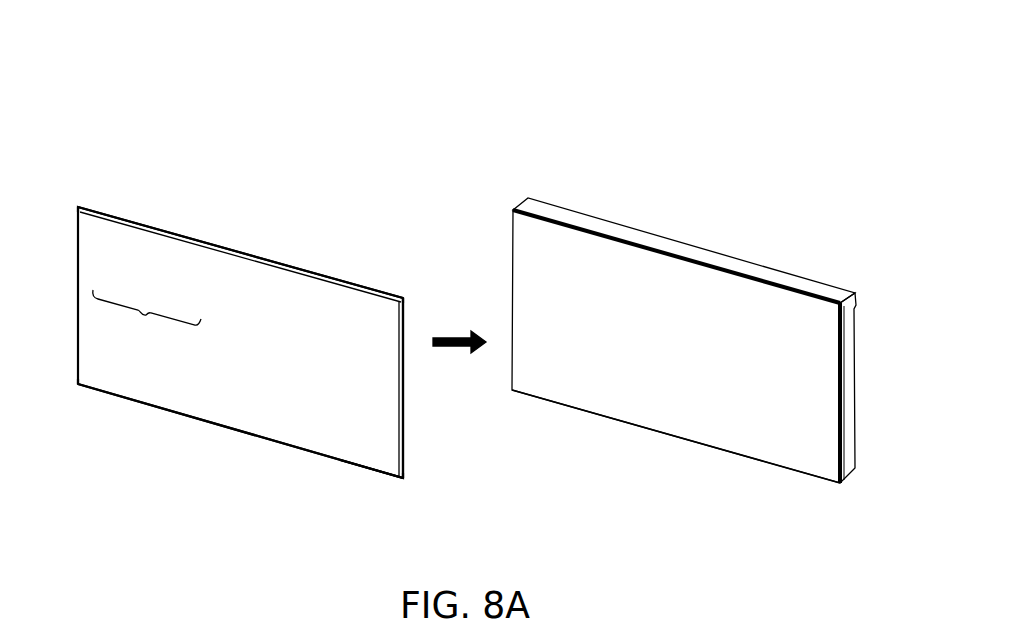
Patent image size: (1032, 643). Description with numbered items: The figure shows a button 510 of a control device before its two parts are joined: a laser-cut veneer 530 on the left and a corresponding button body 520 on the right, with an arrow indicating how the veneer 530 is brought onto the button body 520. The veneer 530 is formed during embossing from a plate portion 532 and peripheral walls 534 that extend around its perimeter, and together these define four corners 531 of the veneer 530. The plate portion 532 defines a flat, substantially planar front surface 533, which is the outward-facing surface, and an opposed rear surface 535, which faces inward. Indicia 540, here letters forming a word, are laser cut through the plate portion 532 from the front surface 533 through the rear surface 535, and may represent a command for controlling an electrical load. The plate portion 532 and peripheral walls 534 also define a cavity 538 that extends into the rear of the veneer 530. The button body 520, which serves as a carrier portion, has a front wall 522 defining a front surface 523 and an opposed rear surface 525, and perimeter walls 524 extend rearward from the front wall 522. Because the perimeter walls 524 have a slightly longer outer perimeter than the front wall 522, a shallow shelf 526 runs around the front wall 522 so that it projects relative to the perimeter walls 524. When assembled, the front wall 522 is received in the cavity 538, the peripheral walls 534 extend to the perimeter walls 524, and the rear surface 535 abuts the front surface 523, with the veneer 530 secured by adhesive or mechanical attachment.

The button 510 is at (80, 92).
The button body 520 is at (511, 257).
The front wall 522 is at (580, 265).
The front surface 523 is at (823, 452).
The perimeter walls 524 is at (777, 277).
The rear surface 525 is at (857, 433).
The shallow shelf 526 is at (673, 257).
The veneer 530 is at (77, 253).
The corners 531 is at (78, 206).
The plate portion 532 is at (232, 403).
The front surface 533 is at (392, 448).
The peripheral walls 534 is at (238, 251).
The rear surface 535 is at (405, 437).
The cavity 538 is at (426, 326).
The indicia 540 is at (143, 315).